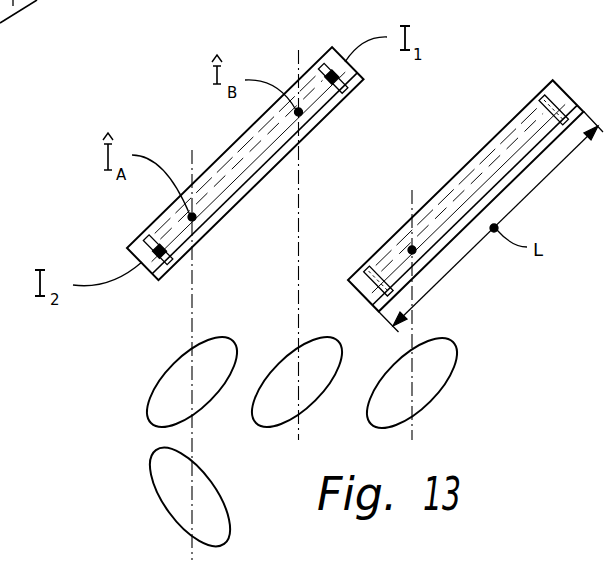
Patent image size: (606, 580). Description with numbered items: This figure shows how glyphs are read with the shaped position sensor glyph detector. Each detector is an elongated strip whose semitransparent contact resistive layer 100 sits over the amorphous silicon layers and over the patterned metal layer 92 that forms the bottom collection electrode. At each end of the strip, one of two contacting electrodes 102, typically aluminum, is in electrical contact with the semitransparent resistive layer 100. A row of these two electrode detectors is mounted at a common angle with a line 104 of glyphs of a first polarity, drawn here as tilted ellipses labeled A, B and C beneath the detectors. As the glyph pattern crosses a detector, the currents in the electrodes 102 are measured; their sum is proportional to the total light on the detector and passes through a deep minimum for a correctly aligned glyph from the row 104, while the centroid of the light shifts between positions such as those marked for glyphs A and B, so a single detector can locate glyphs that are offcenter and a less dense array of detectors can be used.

The metal layer 92 is at (72, 0).
The semitransparent contact resistive layer 100 is at (243, 160).
The contacting electrodes 102 is at (324, 72).
The line of glyphs 104 is at (125, 328).